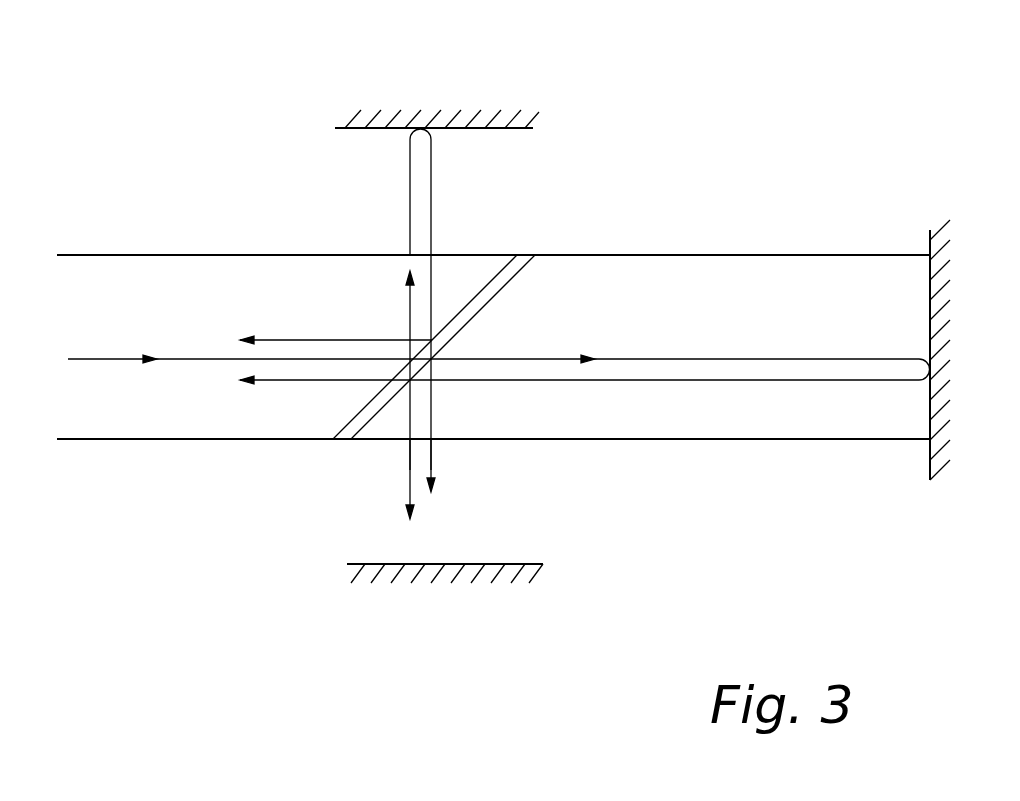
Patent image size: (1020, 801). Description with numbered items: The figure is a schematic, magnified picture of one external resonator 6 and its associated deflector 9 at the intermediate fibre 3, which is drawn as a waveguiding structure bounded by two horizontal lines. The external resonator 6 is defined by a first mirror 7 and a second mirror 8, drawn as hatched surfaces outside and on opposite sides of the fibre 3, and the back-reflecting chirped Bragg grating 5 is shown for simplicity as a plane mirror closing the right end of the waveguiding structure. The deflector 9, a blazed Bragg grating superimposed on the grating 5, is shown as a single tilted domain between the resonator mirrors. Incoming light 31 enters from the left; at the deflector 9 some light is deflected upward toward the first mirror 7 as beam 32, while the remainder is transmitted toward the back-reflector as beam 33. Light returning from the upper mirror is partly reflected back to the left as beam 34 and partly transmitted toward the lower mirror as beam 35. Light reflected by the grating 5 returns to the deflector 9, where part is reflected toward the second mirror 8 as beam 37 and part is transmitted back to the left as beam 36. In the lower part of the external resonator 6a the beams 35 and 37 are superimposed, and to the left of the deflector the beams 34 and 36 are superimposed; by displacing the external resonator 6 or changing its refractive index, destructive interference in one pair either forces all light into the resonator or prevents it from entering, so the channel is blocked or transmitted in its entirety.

The intermediate fibre 3 is at (726, 440).
The chirped Bragg grating 5 is at (928, 284).
The external resonator 6 is at (486, 199).
The lower part of the external resonator 6a is at (507, 526).
The first mirror 7 is at (480, 128).
The second mirror 8 is at (498, 568).
The deflector 9 is at (510, 281).
The incoming light 31 is at (110, 359).
The light deflected towards the upper resonator mirror 32 is at (408, 304).
The light transmitted towards the back-reflector 33 is at (639, 359).
The light reflected back to the left 34 is at (289, 340).
The light transmitted towards the lower resonator mirror 35 is at (433, 413).
The light transmitted back to the left 36 is at (283, 381).
The light reflected towards the lower resonator mirror 37 is at (410, 476).